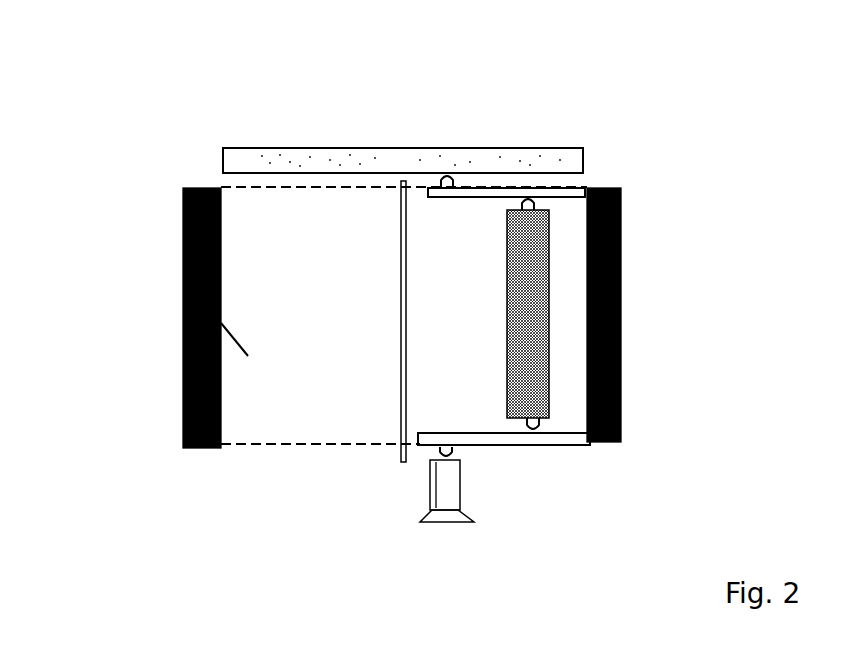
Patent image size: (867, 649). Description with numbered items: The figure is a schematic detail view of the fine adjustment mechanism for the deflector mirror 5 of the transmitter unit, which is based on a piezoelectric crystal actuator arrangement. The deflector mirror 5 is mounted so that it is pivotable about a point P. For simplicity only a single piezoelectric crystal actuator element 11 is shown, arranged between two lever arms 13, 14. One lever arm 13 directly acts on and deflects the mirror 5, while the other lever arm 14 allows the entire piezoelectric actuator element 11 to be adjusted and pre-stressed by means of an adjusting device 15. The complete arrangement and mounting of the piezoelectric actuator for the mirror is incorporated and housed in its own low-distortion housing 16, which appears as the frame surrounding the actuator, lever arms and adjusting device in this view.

The deflector mirror 5 is at (247, 160).
The pivot point P is at (393, 180).
The piezoelectric crystal actuator element 11 is at (547, 410).
The lever arm 13 is at (558, 188).
The lever arm 14 is at (505, 442).
The adjusting device 15 is at (445, 520).
The low-distortion housing 16 is at (182, 296).